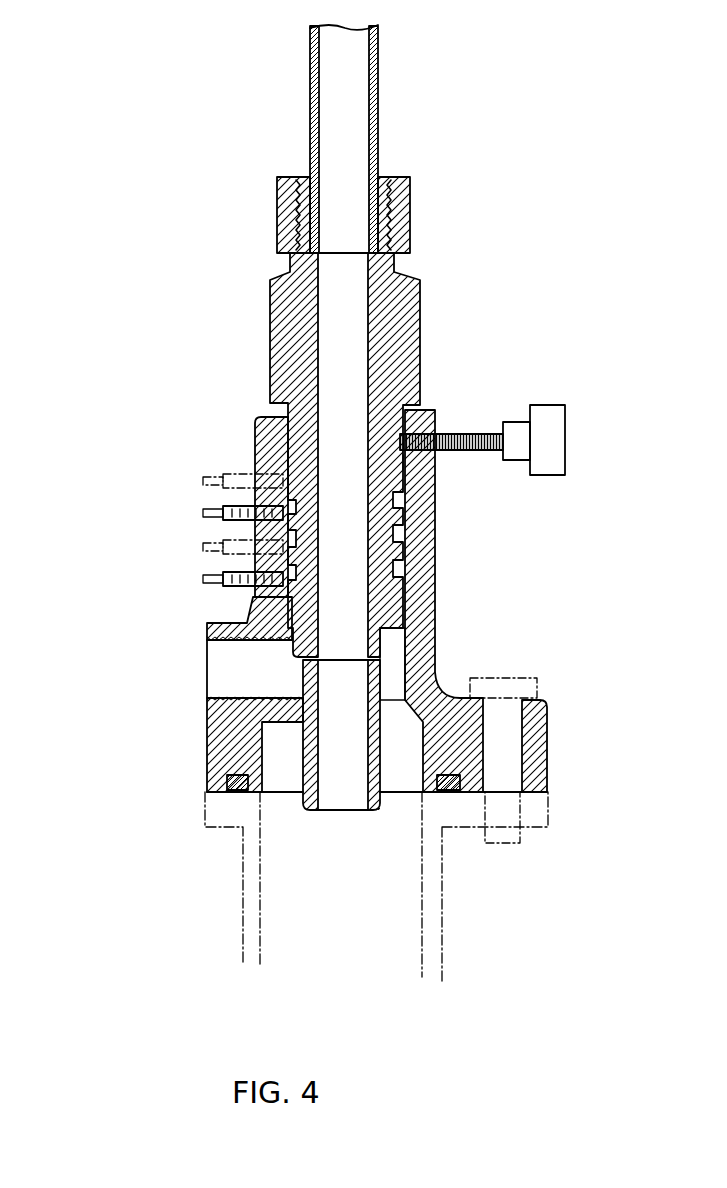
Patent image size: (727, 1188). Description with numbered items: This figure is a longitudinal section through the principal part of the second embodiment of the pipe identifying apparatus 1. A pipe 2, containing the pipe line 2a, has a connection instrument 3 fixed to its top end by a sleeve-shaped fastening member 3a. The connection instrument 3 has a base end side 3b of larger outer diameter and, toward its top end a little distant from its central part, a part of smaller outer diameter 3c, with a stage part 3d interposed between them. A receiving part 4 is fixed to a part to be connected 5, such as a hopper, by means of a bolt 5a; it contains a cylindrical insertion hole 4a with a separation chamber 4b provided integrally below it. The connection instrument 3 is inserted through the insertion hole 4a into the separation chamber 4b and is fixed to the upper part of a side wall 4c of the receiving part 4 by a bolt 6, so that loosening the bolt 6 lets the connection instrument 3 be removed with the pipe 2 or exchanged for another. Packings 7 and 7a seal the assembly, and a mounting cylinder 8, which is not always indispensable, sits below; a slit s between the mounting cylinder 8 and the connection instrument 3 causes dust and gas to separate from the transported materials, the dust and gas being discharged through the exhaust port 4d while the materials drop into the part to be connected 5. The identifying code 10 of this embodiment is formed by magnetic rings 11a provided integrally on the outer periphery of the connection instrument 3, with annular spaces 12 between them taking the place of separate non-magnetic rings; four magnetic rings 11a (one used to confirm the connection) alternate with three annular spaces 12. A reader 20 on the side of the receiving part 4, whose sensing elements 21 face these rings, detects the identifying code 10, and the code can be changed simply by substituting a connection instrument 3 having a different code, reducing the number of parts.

The pipe identifying apparatus 1 is at (467, 162).
The pipe 2 is at (378, 96).
The pipe line 2a is at (344, 150).
The connection instrument 3 is at (423, 348).
The fastening member 3a is at (410, 232).
The base end side 3b is at (270, 355).
The part of smaller outer diameter 3c is at (370, 490).
The stage part 3d is at (405, 472).
The receiving part 4 is at (247, 605).
The insertion hole 4a is at (440, 636).
The separation chamber 4b is at (403, 708).
The side wall 4c is at (207, 778).
The exhaust port 4d is at (215, 660).
The part to be connected 5 is at (548, 827).
The bolt 5a is at (538, 688).
The bolt 6 is at (565, 437).
The packing 7 is at (325, 600).
The packing 7a is at (447, 792).
The mounting cylinder 8 is at (362, 800).
The identifying code 10 is at (258, 420).
The magnetic ring 11a is at (240, 540).
The annular space 12 is at (235, 565).
The reader 20 is at (118, 512).
The electrode 21 is at (200, 480).
The slit s is at (303, 665).